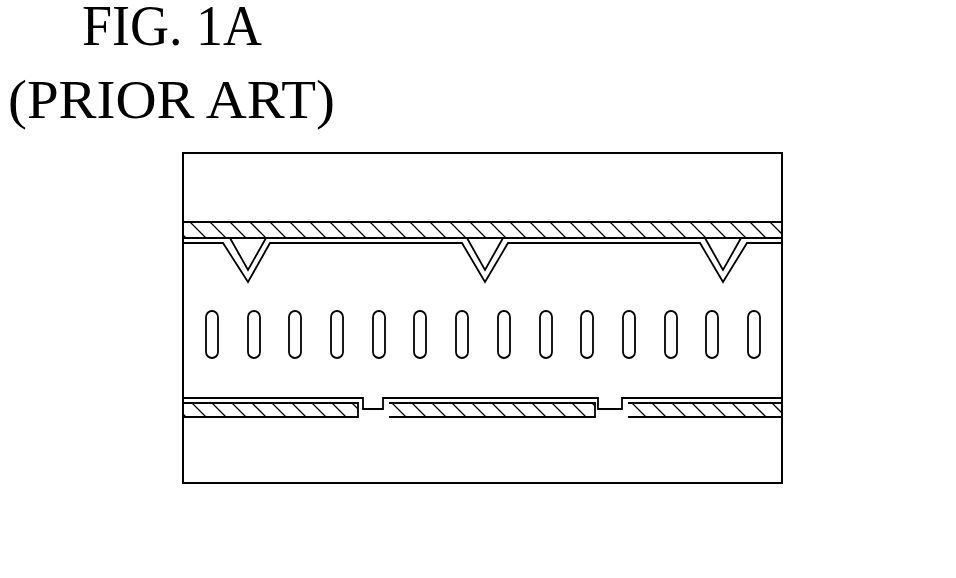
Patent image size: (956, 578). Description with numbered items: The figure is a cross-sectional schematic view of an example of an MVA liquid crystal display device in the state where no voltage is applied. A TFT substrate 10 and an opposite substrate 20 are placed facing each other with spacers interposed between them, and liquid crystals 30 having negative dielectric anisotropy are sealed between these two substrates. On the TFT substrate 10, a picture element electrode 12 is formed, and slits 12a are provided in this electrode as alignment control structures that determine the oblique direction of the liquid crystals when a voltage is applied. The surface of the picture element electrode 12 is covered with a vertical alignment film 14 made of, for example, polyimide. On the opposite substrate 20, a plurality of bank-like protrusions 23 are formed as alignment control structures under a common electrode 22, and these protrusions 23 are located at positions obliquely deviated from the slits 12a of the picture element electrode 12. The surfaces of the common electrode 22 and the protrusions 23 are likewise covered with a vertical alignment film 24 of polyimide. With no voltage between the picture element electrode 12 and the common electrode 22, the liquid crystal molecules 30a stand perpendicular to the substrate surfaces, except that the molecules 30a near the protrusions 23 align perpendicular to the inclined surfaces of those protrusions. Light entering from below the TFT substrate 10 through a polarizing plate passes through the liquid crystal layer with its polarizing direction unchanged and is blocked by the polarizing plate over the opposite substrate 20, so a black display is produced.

The TFT substrate 10 is at (772, 455).
The picture element electrode 12 is at (265, 410).
The slits 12a is at (373, 410).
The vertical alignment film 14 is at (753, 397).
The opposite substrate 20 is at (775, 193).
The common electrode 22 is at (382, 227).
The protrusions 23 is at (252, 253).
The vertical alignment film 24 is at (766, 244).
The liquid crystals 30 is at (447, 310).
The liquid crystal molecules 30a is at (302, 342).